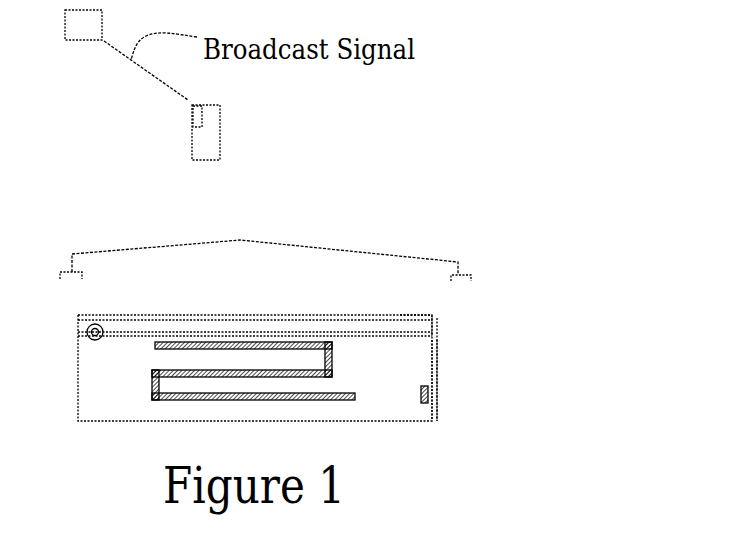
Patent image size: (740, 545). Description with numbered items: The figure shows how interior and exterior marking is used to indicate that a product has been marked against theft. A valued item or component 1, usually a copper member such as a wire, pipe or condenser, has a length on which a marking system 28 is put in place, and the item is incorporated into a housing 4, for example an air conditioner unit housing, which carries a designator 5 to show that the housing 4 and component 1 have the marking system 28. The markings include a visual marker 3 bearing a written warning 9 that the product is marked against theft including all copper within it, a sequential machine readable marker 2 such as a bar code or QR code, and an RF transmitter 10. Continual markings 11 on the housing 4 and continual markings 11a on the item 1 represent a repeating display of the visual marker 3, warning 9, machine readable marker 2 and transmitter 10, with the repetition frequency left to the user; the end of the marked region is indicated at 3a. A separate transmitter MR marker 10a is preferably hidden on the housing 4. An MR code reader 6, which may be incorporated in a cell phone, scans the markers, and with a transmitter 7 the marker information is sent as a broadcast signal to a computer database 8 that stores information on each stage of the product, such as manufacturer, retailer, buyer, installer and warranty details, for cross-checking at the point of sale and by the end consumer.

The valued item 1 is at (152, 390).
The machine readable marker 2 is at (195, 335).
The visual marker 3 is at (242, 240).
The end of antenna assembly 3a is at (432, 331).
The housing 4 is at (436, 366).
The designator 5 is at (89, 332).
The MR code reader 6 is at (198, 150).
The transmitter 7 is at (192, 118).
The computer database 8 is at (126, 55).
The written warning 9 is at (147, 335).
The RF transmitter 10 is at (170, 335).
The transmitter MR marker 10a is at (430, 396).
The continual markings 11 is at (284, 333).
The continual markings on item 11a is at (340, 362).
The marking system 28 is at (345, 343).